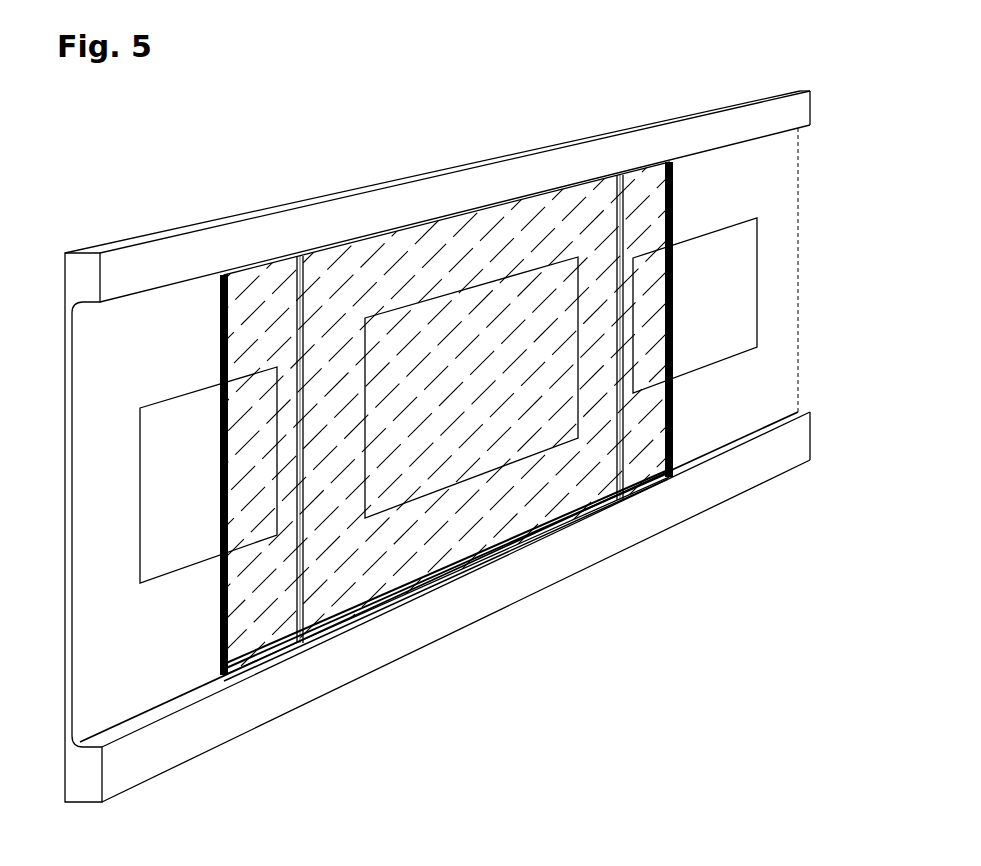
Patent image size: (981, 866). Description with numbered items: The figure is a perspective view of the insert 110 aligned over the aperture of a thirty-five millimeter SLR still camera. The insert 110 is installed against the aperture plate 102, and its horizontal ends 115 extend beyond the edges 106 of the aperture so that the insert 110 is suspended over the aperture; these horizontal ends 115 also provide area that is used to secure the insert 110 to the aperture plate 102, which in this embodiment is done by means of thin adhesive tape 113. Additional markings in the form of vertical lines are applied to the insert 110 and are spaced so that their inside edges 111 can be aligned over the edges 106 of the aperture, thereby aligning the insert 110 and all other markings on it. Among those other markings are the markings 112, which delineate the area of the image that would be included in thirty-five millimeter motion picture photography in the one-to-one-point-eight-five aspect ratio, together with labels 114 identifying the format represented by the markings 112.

The aperture plate 102 is at (777, 275).
The edges of aperture 106 is at (615, 212).
The insert 110 is at (219, 337).
The inside edges 111 is at (303, 578).
The markings 112 is at (578, 347).
The thin adhesive tape 113 is at (708, 302).
The labels 114 is at (568, 470).
The horizontal ends 115 is at (645, 193).